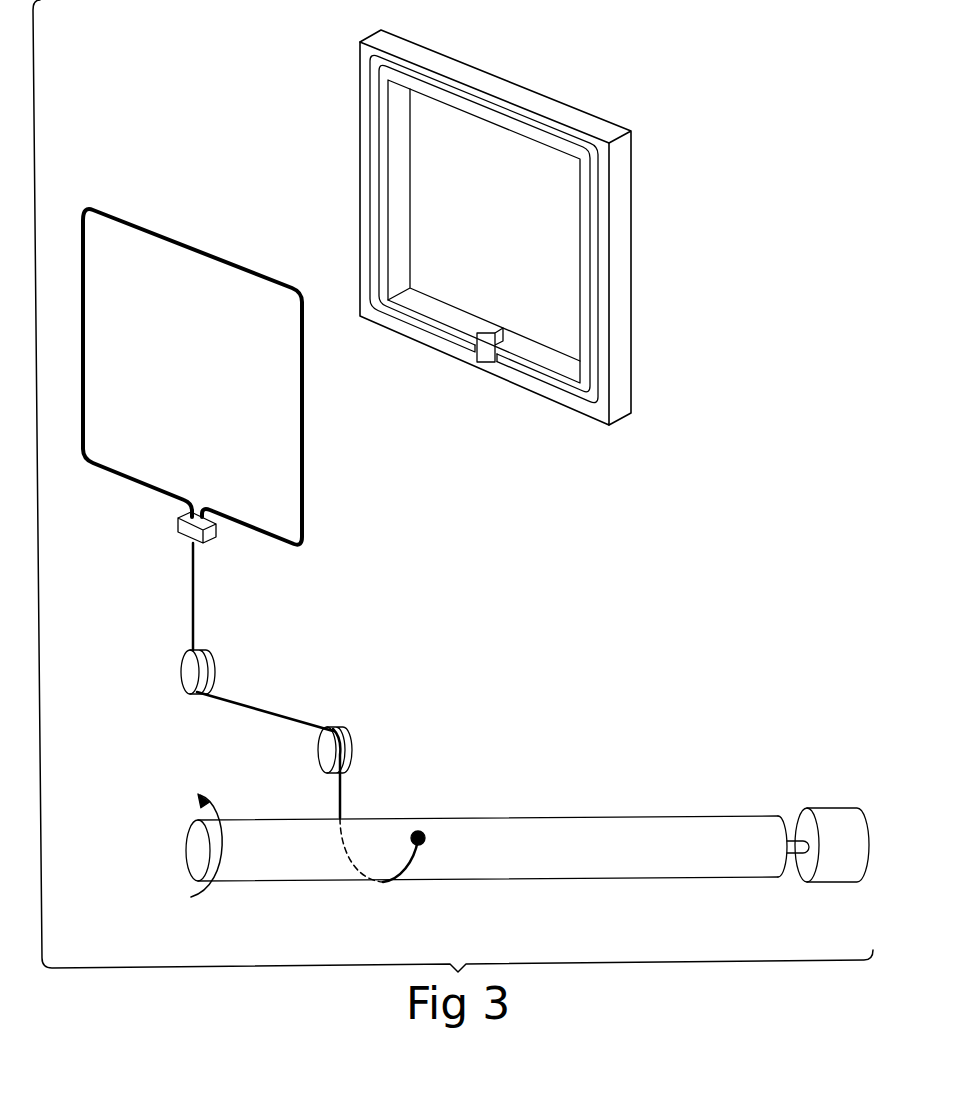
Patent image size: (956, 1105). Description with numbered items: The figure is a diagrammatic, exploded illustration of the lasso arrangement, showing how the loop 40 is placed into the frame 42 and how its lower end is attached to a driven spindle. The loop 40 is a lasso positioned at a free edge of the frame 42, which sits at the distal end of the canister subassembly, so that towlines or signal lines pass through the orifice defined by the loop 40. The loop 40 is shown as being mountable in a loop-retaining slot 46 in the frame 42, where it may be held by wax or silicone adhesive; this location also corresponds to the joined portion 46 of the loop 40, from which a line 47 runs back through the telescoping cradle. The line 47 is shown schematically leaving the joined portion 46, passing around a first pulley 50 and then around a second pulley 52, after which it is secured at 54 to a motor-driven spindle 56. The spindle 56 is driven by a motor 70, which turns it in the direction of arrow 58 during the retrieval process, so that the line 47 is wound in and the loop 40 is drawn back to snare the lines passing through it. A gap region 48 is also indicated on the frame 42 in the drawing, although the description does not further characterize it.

The loop 40 is at (165, 238).
The frame 42 is at (553, 98).
The joined portion 46 is at (177, 530).
The line 47 is at (192, 602).
The coil gap terminal 48 is at (532, 378).
The pulley 50 is at (210, 665).
The pulley 52 is at (350, 740).
The securing point 54 is at (425, 832).
The motor-driven spindle 56 is at (566, 814).
The arrow 58 is at (191, 897).
The motor 70 is at (822, 812).